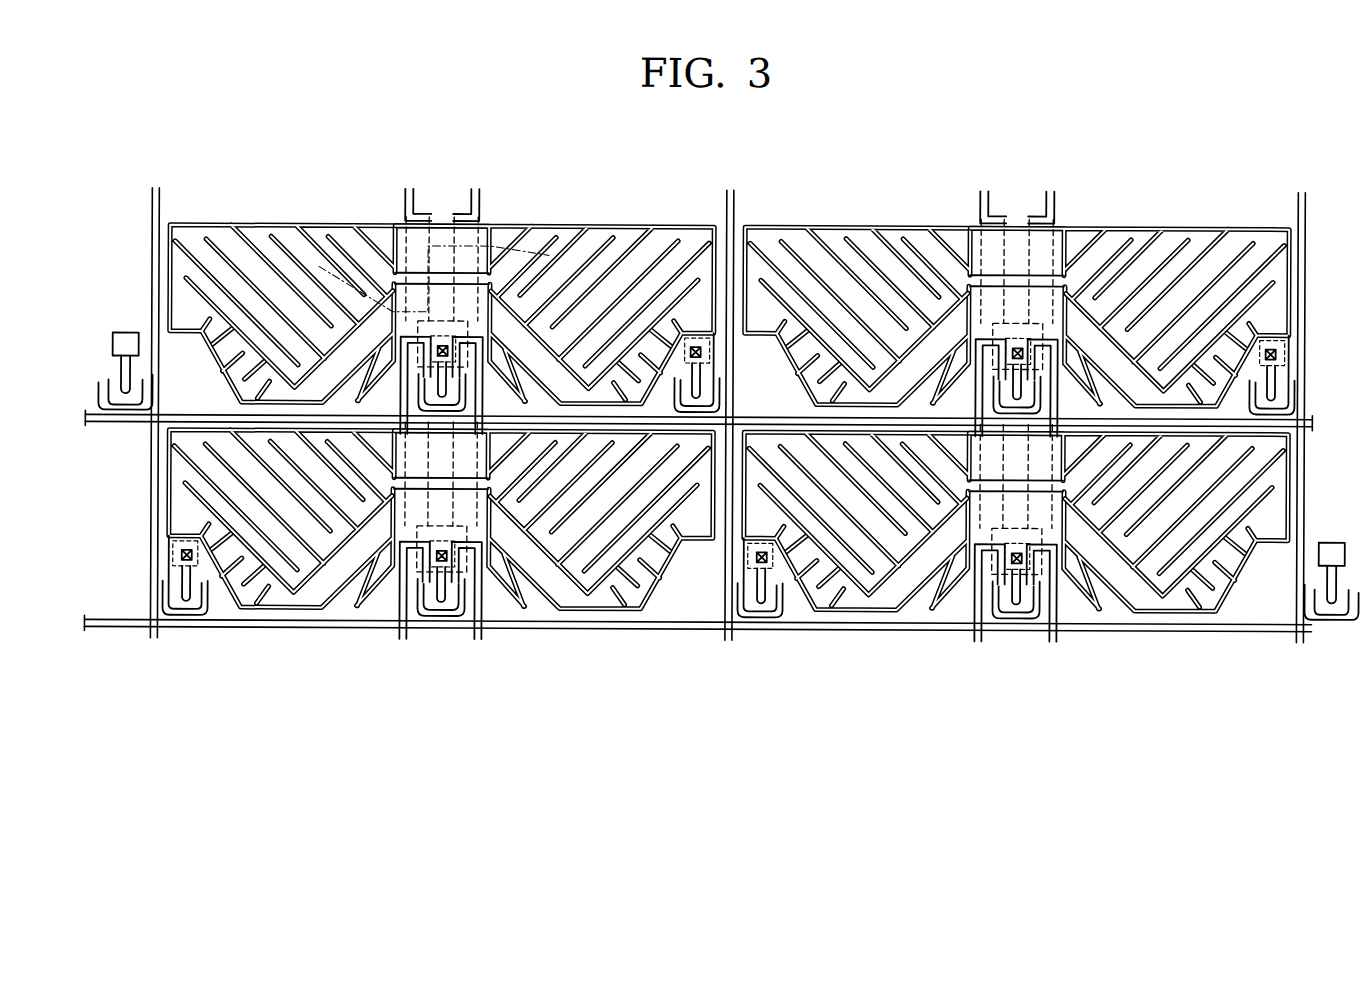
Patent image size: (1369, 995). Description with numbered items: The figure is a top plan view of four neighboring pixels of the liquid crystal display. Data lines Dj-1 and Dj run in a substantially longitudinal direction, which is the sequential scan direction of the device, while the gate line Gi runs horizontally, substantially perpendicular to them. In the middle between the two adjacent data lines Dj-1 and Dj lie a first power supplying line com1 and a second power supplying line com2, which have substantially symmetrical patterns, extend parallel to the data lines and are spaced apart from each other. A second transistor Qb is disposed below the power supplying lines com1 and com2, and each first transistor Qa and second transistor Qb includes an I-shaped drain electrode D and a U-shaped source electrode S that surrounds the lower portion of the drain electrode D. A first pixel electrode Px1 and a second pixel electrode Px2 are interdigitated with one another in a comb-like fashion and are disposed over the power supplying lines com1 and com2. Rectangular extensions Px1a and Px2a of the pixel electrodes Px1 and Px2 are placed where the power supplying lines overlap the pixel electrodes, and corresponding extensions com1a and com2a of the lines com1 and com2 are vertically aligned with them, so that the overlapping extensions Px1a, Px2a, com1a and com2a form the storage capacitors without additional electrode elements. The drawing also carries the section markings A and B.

The data line Dj-1 is at (155, 400).
The data line Dj is at (726, 402).
The gate line Gi is at (682, 418).
The first pixel electrode Px1 is at (246, 225).
The second pixel electrode Px2 is at (272, 236).
The extension of the first pixel electrode Px1a is at (443, 266).
The extension of the second pixel electrode Px2a is at (1038, 526).
The first power supplying line com1 is at (694, 194).
The second power supplying line com2 is at (758, 194).
The extension of the first power supplying line com1a is at (394, 222).
The extension of the second power supplying line com2a is at (488, 222).
The first transistor Qa is at (182, 680).
The second transistor Qb is at (494, 613).
The source electrode S is at (168, 622).
The drain electrode D is at (191, 604).
The section line A- A is at (393, 381).
The section line B- B is at (432, 273).